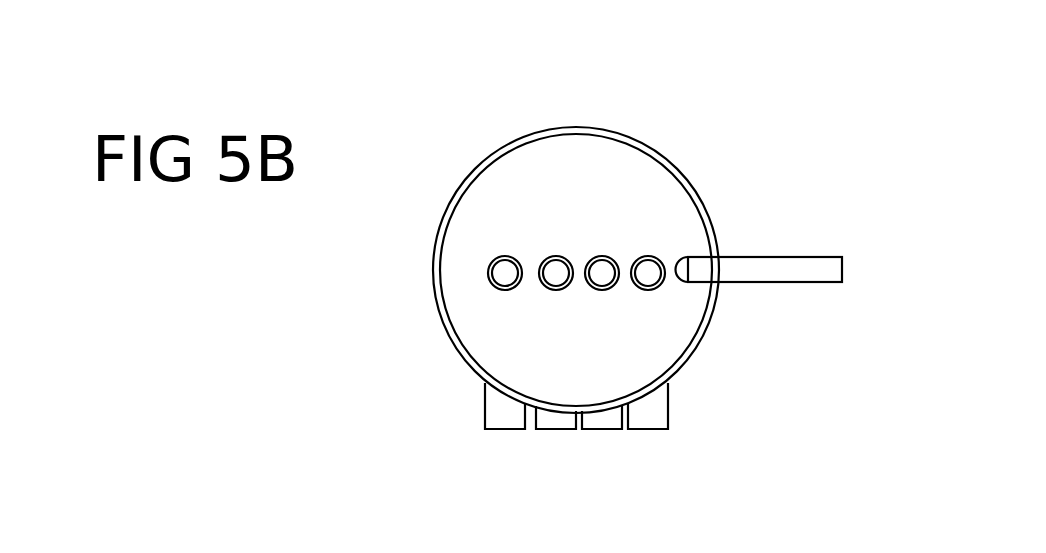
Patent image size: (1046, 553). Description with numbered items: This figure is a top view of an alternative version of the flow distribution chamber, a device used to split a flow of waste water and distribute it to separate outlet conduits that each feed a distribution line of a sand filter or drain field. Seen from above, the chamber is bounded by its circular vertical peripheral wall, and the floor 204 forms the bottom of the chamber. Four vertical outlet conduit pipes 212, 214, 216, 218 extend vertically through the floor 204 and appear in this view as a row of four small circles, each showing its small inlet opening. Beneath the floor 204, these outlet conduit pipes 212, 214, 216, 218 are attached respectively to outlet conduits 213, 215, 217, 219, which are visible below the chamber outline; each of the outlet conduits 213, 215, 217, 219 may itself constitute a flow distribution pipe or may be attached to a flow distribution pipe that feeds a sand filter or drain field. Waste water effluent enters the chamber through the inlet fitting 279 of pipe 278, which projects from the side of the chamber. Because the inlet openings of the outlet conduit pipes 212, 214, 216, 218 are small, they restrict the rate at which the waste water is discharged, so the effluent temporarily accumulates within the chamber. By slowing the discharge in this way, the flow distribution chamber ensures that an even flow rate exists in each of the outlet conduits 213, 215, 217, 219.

The floor 204 is at (541, 343).
The outlet conduit pipe 212 is at (507, 256).
The outlet conduit pipe 214 is at (559, 256).
The outlet conduit pipe 216 is at (606, 256).
The outlet conduit pipe 218 is at (653, 256).
The outlet conduit 213 is at (503, 425).
The outlet conduit 215 is at (553, 425).
The outlet conduit 217 is at (600, 425).
The outlet conduit 219 is at (650, 420).
The pipe 278 is at (748, 265).
The inlet fitting 279 is at (678, 276).